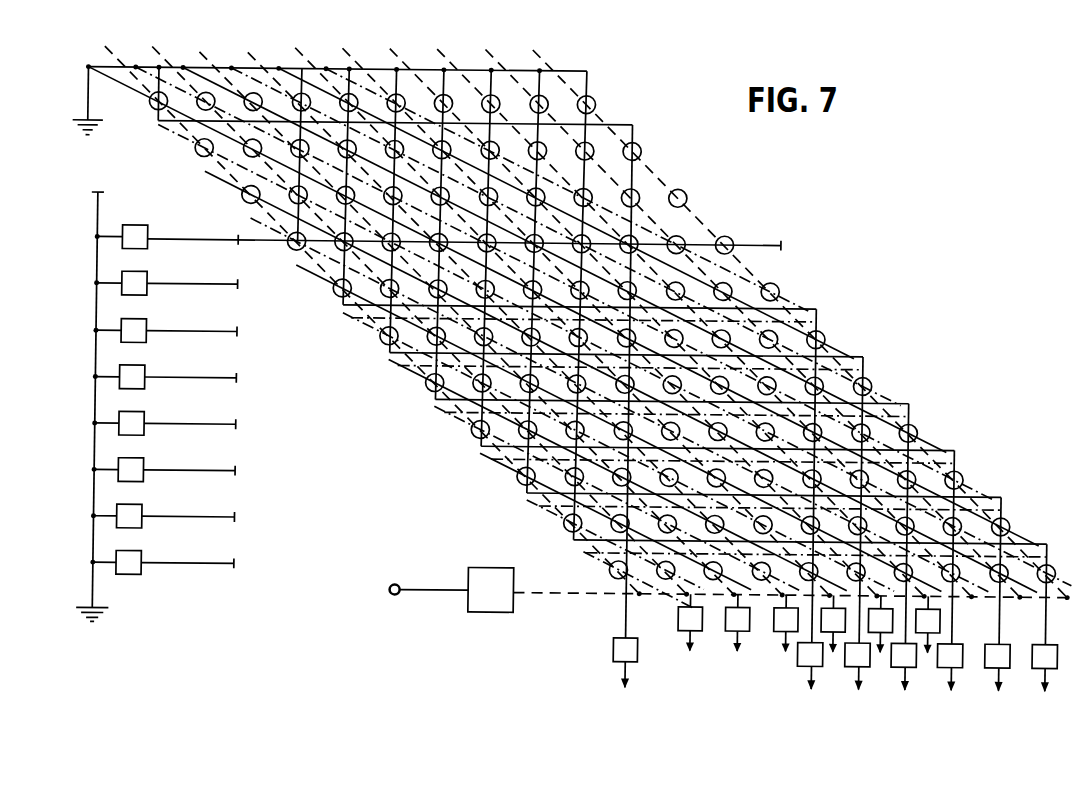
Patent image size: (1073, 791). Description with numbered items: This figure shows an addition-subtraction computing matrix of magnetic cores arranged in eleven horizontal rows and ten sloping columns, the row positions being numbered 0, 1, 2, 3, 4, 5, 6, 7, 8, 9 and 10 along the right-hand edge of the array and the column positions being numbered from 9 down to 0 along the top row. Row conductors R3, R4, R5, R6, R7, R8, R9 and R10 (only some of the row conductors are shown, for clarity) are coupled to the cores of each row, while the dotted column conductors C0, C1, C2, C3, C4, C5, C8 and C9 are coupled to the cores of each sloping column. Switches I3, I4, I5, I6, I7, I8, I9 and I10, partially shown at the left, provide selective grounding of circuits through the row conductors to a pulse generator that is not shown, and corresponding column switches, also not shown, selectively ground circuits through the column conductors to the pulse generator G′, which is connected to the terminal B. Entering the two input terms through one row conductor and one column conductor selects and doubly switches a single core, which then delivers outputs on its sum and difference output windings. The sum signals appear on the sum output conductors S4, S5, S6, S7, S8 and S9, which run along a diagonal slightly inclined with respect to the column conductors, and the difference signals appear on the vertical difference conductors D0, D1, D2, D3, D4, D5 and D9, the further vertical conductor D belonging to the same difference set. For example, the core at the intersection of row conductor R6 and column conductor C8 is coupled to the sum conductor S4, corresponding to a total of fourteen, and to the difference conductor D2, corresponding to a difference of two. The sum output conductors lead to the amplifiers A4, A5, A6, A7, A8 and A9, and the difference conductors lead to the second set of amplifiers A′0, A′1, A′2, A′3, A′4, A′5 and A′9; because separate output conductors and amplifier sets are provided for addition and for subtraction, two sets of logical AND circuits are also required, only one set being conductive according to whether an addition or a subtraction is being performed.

The matrix index label 0 is at (594, 105).
The matrix index label 1 is at (593, 128).
The matrix index label 2 is at (591, 152).
The matrix index label 3 is at (591, 174).
The matrix index label 4 is at (590, 198).
The matrix index label 5 is at (589, 222).
The matrix index label 6 is at (590, 244).
The matrix index label 7 is at (589, 268).
The matrix index label 8 is at (588, 291).
The matrix index label 9 is at (587, 314).
The row index label 10 is at (1055, 574).
The column conductor C0 is at (789, 309).
The column conductor C1 is at (744, 309).
The column conductor C2 is at (696, 308).
The column conductor C3 is at (648, 308).
The column conductor C4 is at (602, 307).
The column conductor C5 is at (555, 307).
The column conductor C8 is at (410, 306).
The column conductor C9 is at (364, 305).
The row conductor R3 is at (465, 233).
The row conductor R4 is at (192, 277).
The row conductor R5 is at (191, 324).
The row conductor R6 is at (191, 370).
The row conductor R7 is at (190, 417).
The row conductor R8 is at (189, 463).
The row conductor R9 is at (188, 509).
The row conductor R10 is at (187, 556).
The switch I3 is at (146, 247).
The switch I4 is at (146, 294).
The switch I5 is at (146, 342).
The switch I6 is at (145, 389).
The switch I7 is at (145, 436).
The switch I8 is at (145, 483).
The switch I9 is at (144, 530).
The switch I10 is at (144, 577).
The sum output conductor S4 is at (362, 318).
The sum output conductor S5 is at (408, 366).
The sum output conductor S6 is at (456, 413).
The sum output conductor S7 is at (504, 460).
The sum output conductor S8 is at (550, 507).
The sum output conductor S9 is at (598, 554).
The difference output conductor D is at (1048, 622).
The difference output conductor D0 is at (954, 546).
The difference output conductor D1 is at (1007, 513).
The difference output conductor D2 is at (960, 467).
The difference output conductor D3 is at (914, 420).
The difference output conductor D4 is at (868, 374).
The difference output conductor D5 is at (822, 327).
The difference output conductor D9 is at (631, 614).
The amplifier A4 is at (927, 624).
The amplifier A5 is at (880, 624).
The amplifier A6 is at (833, 623).
The amplifier A7 is at (785, 623).
The amplifier A8 is at (737, 623).
The amplifier A9 is at (690, 622).
The amplifier A′0 is at (1035, 662).
The amplifier A′1 is at (988, 662).
The amplifier A′2 is at (941, 662).
The amplifier A′3 is at (895, 662).
The amplifier A′4 is at (849, 662).
The amplifier A′5 is at (802, 662).
The amplifier A′9 is at (619, 660).
The input terminal B is at (417, 590).
The pulse generator G′ is at (770, 593).